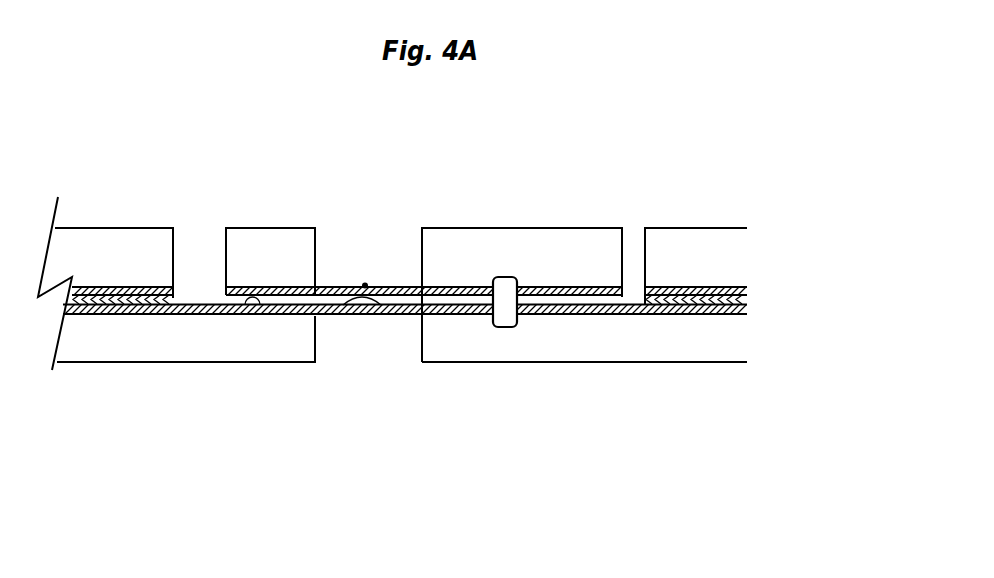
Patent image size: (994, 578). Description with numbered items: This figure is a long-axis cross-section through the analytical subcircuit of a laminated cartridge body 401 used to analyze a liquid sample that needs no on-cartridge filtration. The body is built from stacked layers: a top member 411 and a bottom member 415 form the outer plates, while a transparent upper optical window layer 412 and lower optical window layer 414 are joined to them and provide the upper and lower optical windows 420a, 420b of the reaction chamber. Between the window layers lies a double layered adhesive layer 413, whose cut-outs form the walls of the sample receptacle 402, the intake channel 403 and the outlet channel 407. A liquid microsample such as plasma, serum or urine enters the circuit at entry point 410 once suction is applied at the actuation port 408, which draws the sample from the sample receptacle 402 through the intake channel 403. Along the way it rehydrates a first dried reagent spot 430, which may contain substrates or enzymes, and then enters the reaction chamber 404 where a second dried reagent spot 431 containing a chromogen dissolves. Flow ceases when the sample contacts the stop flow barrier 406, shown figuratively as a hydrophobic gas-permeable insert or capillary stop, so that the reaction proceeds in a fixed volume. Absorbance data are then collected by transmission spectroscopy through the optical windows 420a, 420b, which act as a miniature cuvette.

The cartridge body 401 is at (392, 480).
The sample receptacle 402 is at (201, 254).
The intake channel 403 is at (274, 274).
The reaction chamber 404 is at (400, 308).
The stop flow barrier 406 is at (505, 275).
The outlet channel 407 is at (451, 322).
The actuation port 408 is at (633, 229).
The sample entry point 410 is at (221, 300).
The top member 411 is at (748, 253).
The upper optical window layer 412 is at (751, 289).
The double layered adhesive layer 413 is at (752, 302).
The lower optical window layer 414 is at (752, 313).
The bottom member 415 is at (749, 342).
The upper optical window 420a is at (384, 302).
The lower optical window 420b is at (347, 306).
The reagent spot 430 is at (252, 307).
The reagent spot 431 is at (365, 284).